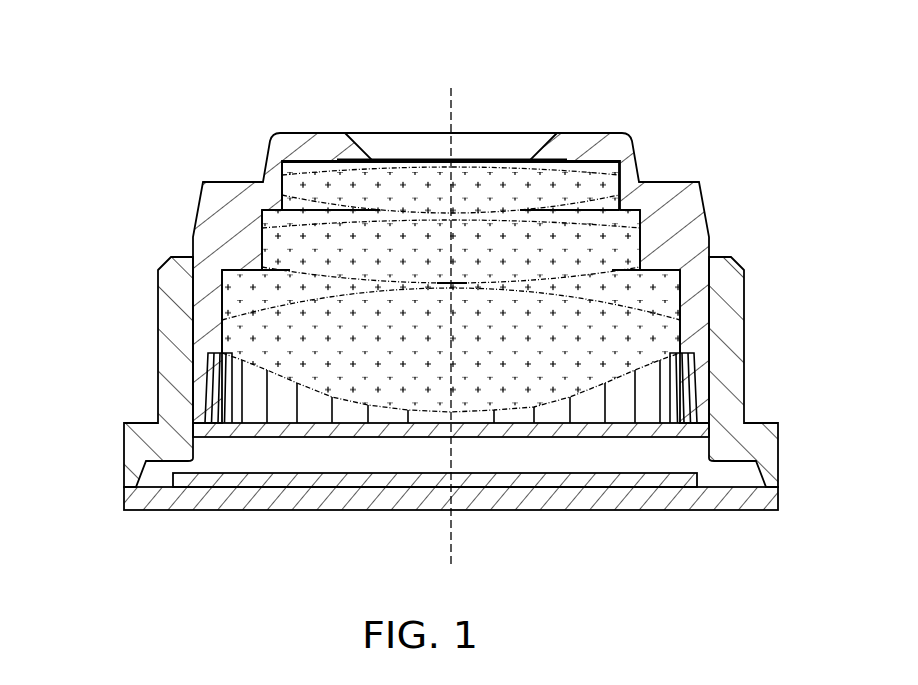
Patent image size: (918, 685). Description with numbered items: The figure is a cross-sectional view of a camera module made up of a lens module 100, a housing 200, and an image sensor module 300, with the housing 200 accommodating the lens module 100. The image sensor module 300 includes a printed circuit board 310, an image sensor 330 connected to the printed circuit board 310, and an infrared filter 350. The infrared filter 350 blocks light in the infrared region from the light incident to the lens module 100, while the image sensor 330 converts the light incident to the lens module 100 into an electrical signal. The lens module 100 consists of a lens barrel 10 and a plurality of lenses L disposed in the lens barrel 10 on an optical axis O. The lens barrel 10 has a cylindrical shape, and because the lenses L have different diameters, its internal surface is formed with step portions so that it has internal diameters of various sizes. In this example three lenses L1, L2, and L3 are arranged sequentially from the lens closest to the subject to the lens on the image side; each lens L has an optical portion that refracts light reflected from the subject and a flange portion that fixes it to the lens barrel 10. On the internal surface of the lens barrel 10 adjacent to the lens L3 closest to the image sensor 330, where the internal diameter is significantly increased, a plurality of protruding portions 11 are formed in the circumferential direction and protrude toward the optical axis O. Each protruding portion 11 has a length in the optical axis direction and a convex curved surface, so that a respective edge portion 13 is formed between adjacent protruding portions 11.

The lens module 100 is at (550, 100).
The lens barrel 10 is at (678, 190).
The protruding portion 11 is at (622, 412).
The edge portion 13 is at (637, 407).
The lens L is at (97, 132).
The first lens L1 is at (297, 187).
The second lens L2 is at (273, 243).
The third lens L3 is at (240, 320).
The optical axis O is at (451, 314).
The housing 200 is at (135, 443).
The image sensor module 300 is at (255, 568).
The printed circuit board 310 is at (160, 493).
The image sensor 330 is at (230, 482).
The infrared filter 350 is at (383, 427).